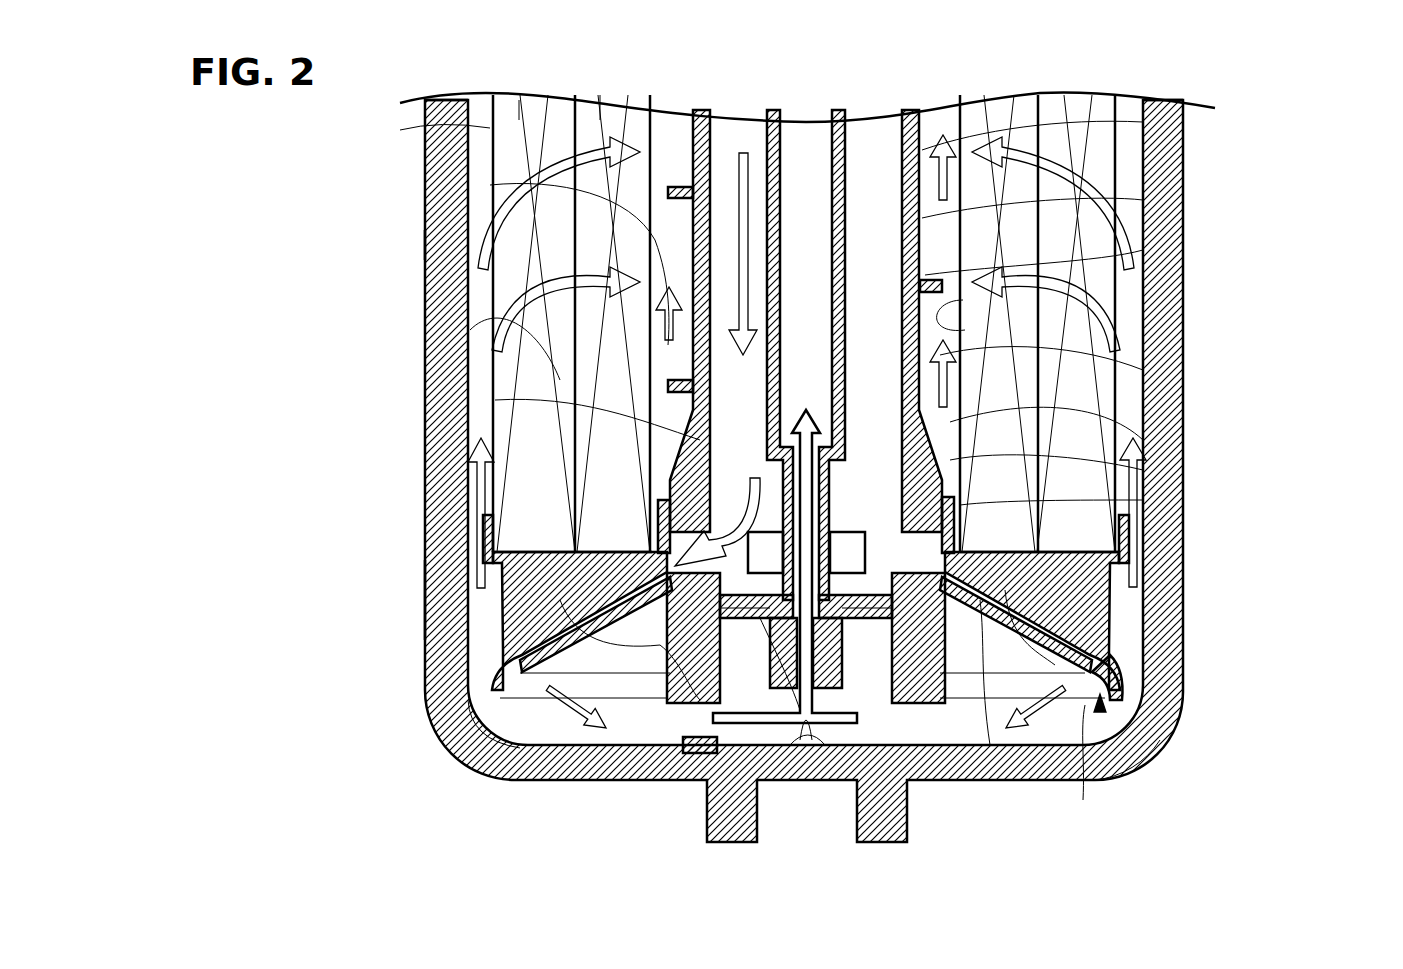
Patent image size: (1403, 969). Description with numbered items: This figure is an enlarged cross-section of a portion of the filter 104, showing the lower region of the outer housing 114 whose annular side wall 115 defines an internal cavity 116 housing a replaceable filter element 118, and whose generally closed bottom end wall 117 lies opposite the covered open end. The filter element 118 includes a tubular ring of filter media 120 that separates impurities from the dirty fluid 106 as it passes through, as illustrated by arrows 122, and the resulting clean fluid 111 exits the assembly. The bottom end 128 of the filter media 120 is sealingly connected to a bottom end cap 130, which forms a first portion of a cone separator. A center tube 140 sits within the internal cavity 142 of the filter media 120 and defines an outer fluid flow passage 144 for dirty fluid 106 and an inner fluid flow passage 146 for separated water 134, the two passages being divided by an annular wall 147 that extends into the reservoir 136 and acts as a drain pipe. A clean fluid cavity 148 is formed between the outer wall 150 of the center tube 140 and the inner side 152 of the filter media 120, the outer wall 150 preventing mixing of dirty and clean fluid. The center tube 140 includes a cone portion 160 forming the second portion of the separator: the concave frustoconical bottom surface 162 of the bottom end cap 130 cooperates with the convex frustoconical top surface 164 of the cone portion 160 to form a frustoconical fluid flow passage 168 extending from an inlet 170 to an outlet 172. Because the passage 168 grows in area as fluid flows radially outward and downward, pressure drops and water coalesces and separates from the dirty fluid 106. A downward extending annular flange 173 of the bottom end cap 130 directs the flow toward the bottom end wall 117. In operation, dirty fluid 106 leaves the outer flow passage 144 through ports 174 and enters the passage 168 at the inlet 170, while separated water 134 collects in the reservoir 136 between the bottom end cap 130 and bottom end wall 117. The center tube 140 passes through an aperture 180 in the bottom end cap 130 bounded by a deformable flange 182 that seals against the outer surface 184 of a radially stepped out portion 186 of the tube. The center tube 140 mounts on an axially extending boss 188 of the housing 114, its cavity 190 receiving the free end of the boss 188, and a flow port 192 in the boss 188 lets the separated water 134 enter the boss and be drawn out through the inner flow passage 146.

The filter 104 is at (290, 283).
The dirty fluid 106 is at (748, 168).
The clean fluid 111 is at (455, 188).
The outer housing 114 is at (428, 598).
The annular side wall 115 is at (466, 243).
The internal cavity 116 is at (491, 333).
The bottom end wall 117 is at (1008, 770).
The filter element 118 is at (427, 130).
The filter media 120 is at (515, 388).
The arrows 122 is at (458, 280).
The bottom end 128 is at (502, 622).
The bottom end cap 130 is at (520, 650).
The separated water 134 is at (530, 760).
The reservoir 136 is at (480, 758).
The center tube 140 is at (1143, 257).
The internal cavity 142 is at (1143, 440).
The outer fluid flow passage 144 is at (1140, 490).
The inner fluid flow passage 146 is at (1143, 383).
The annular wall 147 is at (1143, 192).
The clean fluid cavity 148 is at (1185, 135).
The outer wall 150 is at (1143, 228).
The inner side 152 is at (1143, 325).
The cone portion 160 is at (520, 722).
The bottom surface 162 is at (1098, 735).
The top surface 164 is at (1120, 620).
The fluid flow passage 168 is at (1118, 660).
The inlet 170 is at (1130, 570).
The outlet 172 is at (1115, 765).
The annular flange 173 is at (1130, 697).
The ports 174 is at (1125, 540).
The aperture 180 is at (668, 487).
The deformable flange 182 is at (656, 505).
The outer surface 184 is at (663, 405).
The radially stepped out portion 186 is at (660, 493).
The boss 188 is at (745, 612).
The cavity 190 is at (805, 620).
The flow port 192 is at (670, 748).